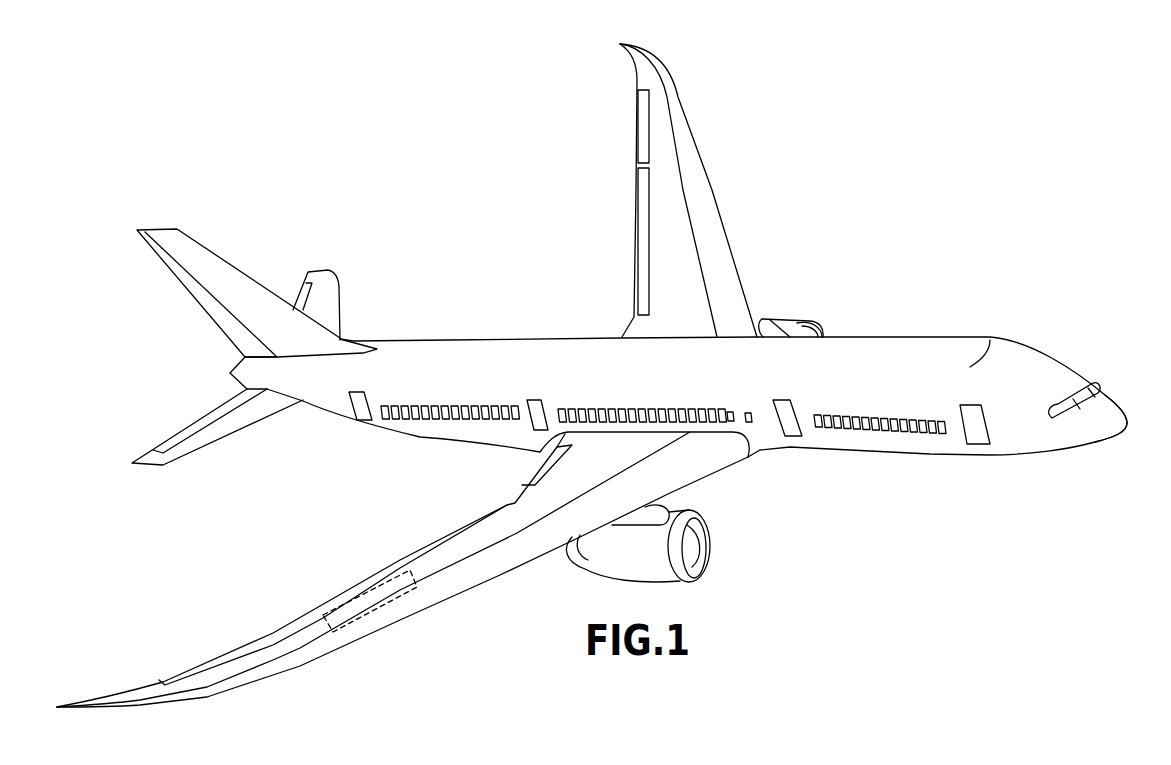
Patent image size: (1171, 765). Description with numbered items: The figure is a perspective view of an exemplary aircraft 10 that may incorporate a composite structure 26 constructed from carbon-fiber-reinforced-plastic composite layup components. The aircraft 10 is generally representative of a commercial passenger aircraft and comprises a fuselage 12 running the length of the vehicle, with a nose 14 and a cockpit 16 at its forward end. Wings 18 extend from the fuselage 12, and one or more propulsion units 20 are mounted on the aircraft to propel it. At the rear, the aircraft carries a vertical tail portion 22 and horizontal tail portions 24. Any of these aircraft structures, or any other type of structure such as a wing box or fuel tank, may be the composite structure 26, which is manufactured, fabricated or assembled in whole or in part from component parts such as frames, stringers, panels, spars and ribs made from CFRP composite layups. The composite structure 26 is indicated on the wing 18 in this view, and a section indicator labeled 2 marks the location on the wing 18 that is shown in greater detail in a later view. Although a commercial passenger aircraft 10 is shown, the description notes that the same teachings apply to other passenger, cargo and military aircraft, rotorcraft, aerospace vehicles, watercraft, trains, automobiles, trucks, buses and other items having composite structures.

The aircraft 10 is at (937, 169).
The fuselage 12 is at (880, 350).
The nose 14 is at (1110, 427).
The cockpit 16 is at (1093, 382).
The wings 18 is at (677, 120).
The propulsion units 20 is at (700, 565).
The vertical tail portion 22 is at (220, 277).
The horizontal tail portions 24 is at (326, 300).
The composite structure 26 is at (357, 597).
The section view indicator for FIG. 2 is at (517, 479).